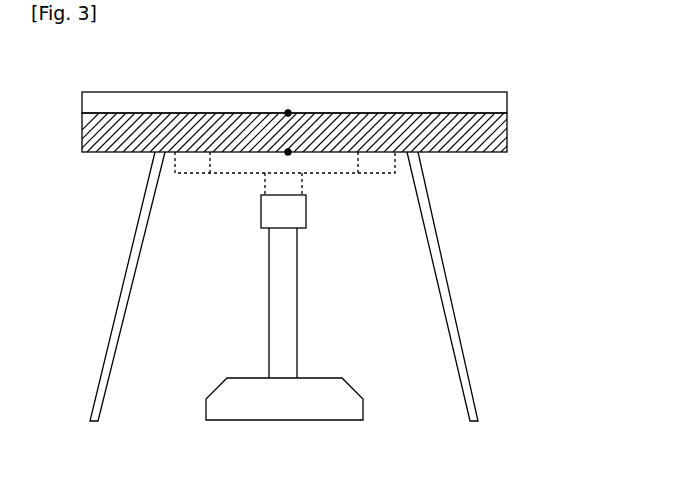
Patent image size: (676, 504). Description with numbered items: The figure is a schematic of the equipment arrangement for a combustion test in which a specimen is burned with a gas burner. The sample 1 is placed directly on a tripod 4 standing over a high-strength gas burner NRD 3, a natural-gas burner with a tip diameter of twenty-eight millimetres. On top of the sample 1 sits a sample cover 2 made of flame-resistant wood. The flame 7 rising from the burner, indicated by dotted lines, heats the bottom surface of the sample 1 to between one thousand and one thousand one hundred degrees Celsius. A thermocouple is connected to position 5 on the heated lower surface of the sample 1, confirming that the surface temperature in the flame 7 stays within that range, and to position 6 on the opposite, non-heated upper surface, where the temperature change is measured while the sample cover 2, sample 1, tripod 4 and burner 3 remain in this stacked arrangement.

The sample 1 is at (508, 140).
The sample cover 2 is at (508, 100).
The high-strength gas burner NRD 3 is at (298, 263).
The tripod 4 is at (436, 228).
The position on surface A 5 is at (282, 156).
The position on surface B 6 is at (294, 111).
The flame 7 is at (347, 177).